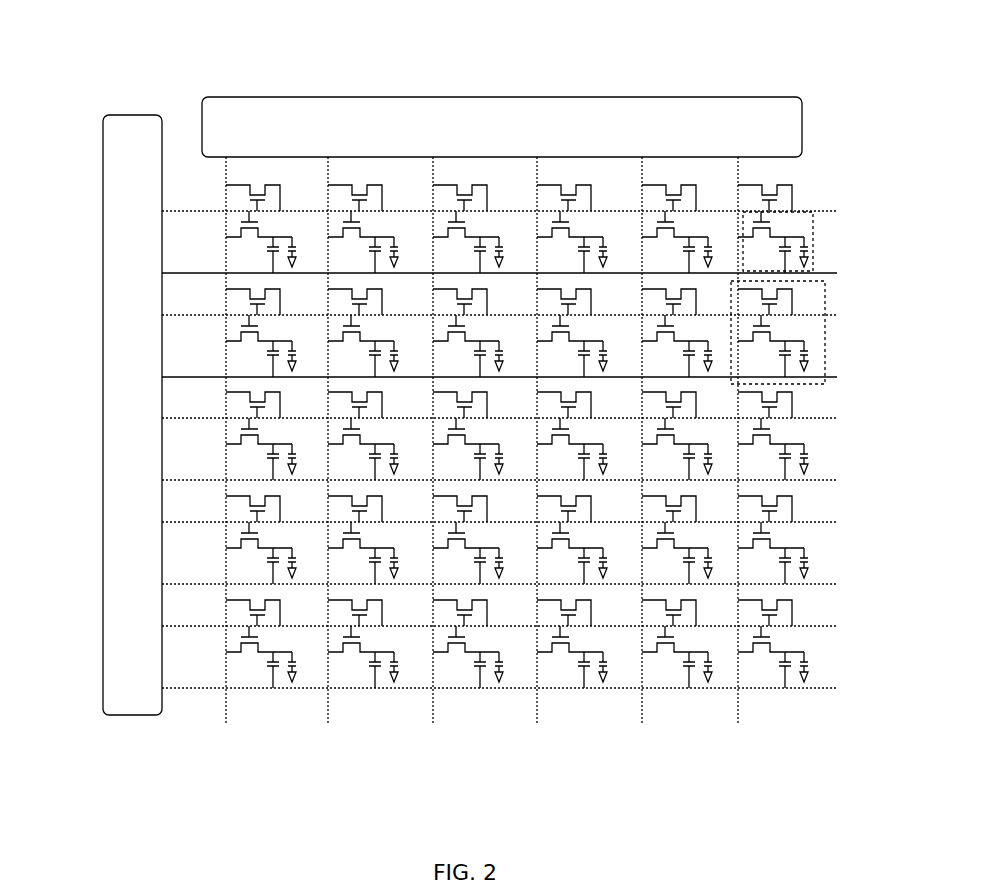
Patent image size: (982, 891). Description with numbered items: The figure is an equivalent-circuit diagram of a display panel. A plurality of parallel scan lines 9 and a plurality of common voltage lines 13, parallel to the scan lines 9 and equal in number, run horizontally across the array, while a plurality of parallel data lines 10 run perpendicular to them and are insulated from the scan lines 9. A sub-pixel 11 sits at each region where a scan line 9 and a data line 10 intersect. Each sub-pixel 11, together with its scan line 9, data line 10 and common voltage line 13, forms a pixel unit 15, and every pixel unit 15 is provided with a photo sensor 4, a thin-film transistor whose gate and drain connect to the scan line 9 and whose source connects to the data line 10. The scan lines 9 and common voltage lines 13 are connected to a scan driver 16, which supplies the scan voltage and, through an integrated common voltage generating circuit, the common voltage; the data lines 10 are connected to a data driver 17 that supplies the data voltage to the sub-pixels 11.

The data driver 17 is at (730, 95).
The scan driver 16 is at (100, 255).
The sub-pixel 11 is at (813, 212).
The pixel unit 15 is at (825, 358).
The photo sensor 4 is at (797, 298).
The common voltage line 13 is at (825, 481).
The scan line 9 is at (825, 522).
The data line 10 is at (433, 710).